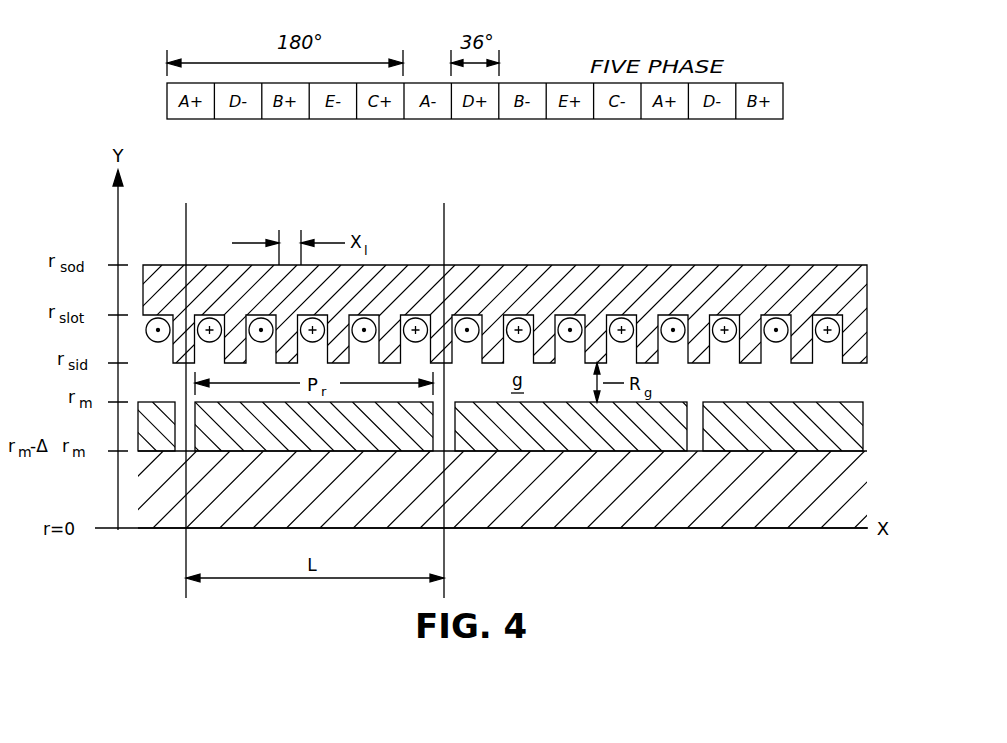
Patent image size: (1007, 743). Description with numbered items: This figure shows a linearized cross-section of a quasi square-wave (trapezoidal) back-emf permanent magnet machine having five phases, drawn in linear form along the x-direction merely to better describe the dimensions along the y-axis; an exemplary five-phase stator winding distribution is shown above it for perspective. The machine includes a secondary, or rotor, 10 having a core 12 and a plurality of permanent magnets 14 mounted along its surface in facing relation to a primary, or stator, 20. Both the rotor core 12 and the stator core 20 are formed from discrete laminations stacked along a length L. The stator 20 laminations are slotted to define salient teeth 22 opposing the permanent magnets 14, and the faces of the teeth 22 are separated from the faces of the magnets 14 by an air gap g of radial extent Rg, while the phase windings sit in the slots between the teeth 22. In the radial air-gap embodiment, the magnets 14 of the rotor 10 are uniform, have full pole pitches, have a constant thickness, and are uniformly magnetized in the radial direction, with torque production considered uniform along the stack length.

The secondary (rotor) 10 is at (715, 542).
The secondary (rotor) core 12 is at (774, 506).
The permanent magnets 14 is at (293, 438).
The primary (stator) 20 is at (552, 256).
The salient teeth 22 is at (261, 318).